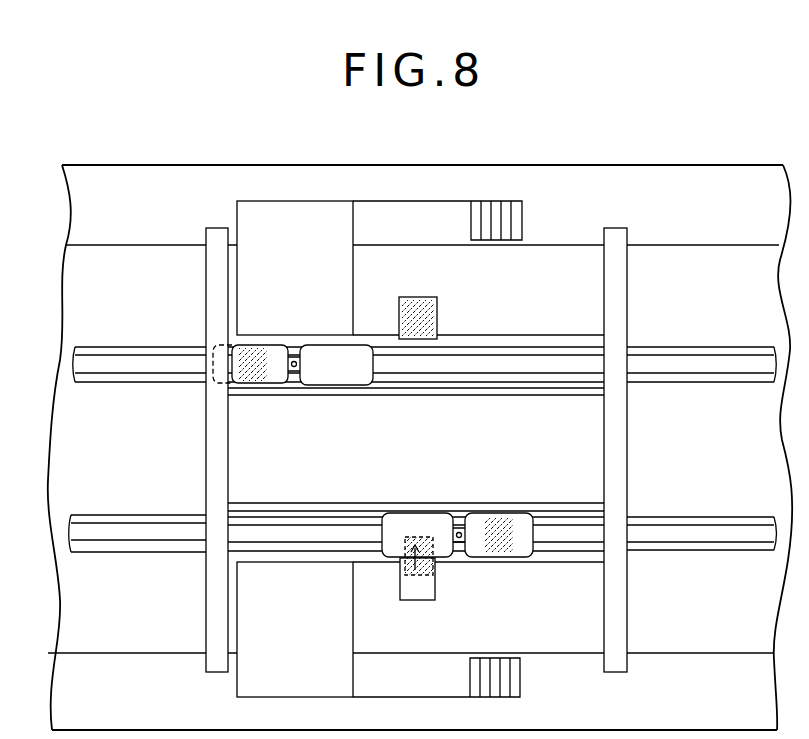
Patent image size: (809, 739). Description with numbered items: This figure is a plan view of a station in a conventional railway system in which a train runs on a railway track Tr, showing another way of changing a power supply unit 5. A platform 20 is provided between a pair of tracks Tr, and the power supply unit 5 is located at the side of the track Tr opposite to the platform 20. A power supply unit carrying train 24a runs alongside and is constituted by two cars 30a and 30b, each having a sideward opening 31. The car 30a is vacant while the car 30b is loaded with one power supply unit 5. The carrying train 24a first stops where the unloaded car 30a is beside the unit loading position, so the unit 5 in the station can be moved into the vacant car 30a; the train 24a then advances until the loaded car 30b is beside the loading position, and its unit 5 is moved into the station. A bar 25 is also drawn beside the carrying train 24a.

The railway track Tr is at (134, 357).
The power supply unit 5 is at (252, 346).
The platform 20 is at (596, 484).
The power supply unit carrying train 24a is at (322, 345).
The guide bar 25 is at (213, 665).
The car 30a is at (277, 350).
The car 30b is at (326, 386).
The sideward opening 31 is at (403, 598).